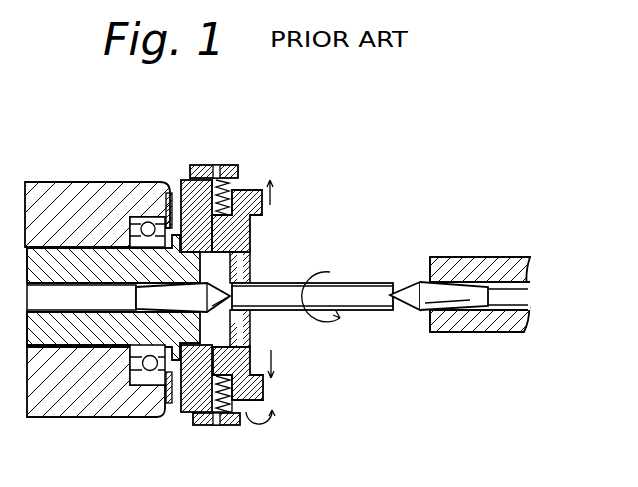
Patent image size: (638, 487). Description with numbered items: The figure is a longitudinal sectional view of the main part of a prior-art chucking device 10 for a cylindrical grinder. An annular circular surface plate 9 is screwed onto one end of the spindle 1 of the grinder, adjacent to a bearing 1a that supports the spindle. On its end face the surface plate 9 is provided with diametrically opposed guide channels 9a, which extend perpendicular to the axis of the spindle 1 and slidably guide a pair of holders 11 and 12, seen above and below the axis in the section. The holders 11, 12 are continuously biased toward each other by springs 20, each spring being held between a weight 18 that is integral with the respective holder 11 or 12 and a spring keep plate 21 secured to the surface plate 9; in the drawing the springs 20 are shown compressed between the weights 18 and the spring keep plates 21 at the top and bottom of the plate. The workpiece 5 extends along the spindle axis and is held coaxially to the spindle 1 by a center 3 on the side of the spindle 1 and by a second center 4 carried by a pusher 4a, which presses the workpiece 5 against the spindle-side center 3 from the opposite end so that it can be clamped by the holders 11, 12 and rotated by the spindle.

The spindle 1 is at (59, 256).
The bearing 1a is at (142, 222).
The surface plate 9 is at (183, 182).
The spring keep plates 21 is at (201, 165).
The guide channels 9a is at (218, 170).
The springs 20 is at (233, 178).
The weights 18 is at (234, 190).
The holder 11 is at (250, 238).
The holder 12 is at (264, 390).
The center 3 is at (226, 301).
The workpiece 5 is at (376, 283).
The center 4 is at (430, 311).
The pusher 4a is at (508, 322).
The prior art driving device 10 is at (312, 209).